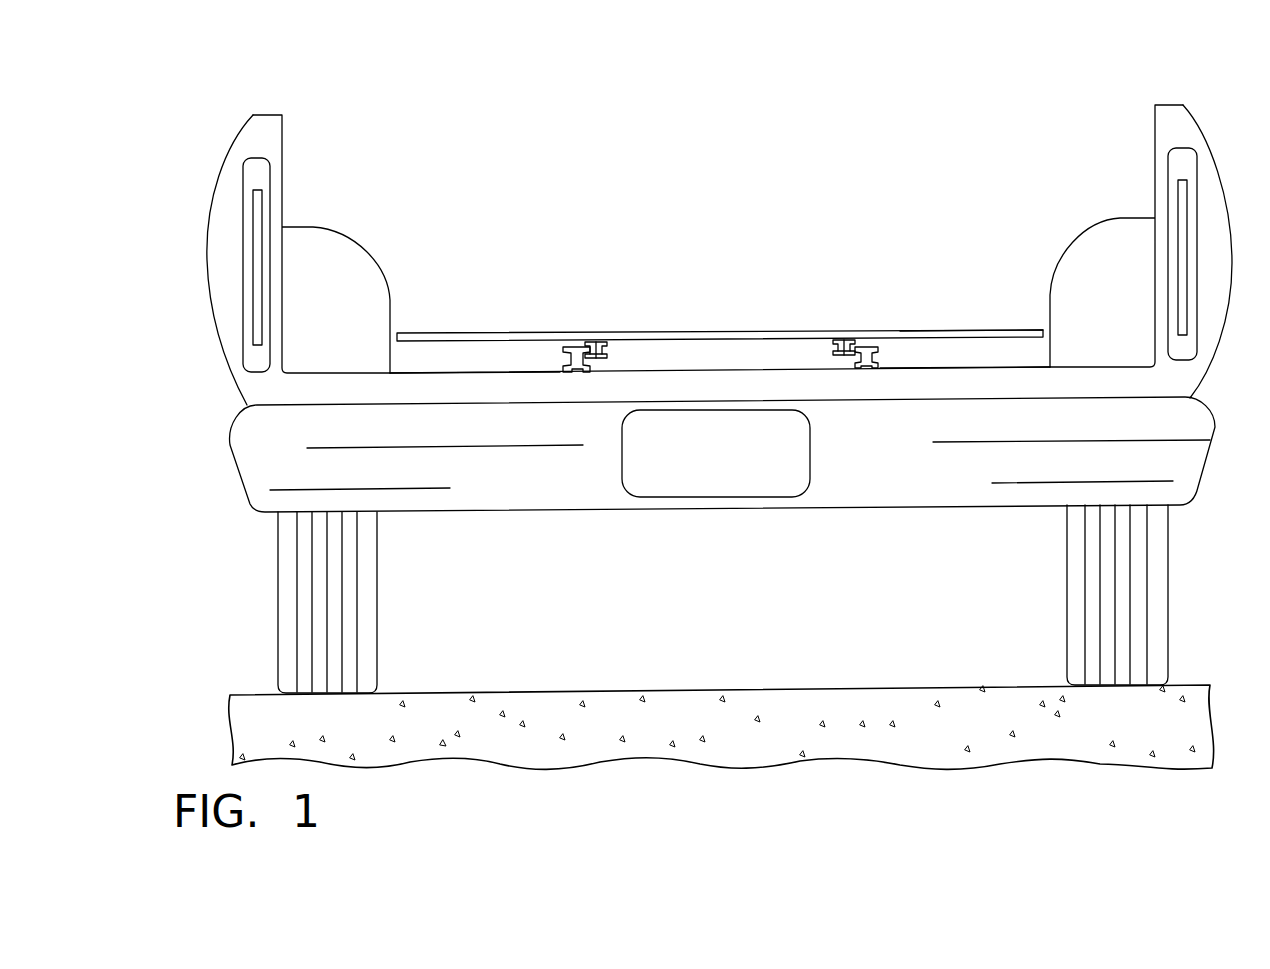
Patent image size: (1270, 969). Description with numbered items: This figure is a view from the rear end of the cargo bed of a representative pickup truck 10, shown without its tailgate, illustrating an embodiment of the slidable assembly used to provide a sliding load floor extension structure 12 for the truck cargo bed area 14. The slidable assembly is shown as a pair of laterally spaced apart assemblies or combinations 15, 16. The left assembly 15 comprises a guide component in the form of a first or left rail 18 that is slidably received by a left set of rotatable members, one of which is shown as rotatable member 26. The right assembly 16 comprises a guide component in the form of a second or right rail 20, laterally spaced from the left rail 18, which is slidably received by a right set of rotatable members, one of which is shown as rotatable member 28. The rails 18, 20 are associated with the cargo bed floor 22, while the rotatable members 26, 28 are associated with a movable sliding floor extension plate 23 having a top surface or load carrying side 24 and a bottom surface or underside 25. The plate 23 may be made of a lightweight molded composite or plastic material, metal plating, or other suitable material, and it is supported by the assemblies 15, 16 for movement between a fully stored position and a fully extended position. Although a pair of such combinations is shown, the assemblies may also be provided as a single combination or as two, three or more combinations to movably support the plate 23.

The pickup truck 10 is at (729, 66).
The sliding load floor extension structure 12 is at (649, 270).
The truck cargo bed area 14 is at (356, 110).
The left assembly or combination 15 is at (545, 361).
The right assembly or combination 16 is at (895, 357).
The first or left rail 18 is at (577, 345).
The second or right rail 20 is at (858, 345).
The cargo bed floor 22 is at (463, 373).
The movable sliding floor extension plate 23 is at (960, 333).
The top surface or load carrying side 24 is at (472, 333).
The bottom surface or underside 25 is at (1026, 340).
The rotatable member 26 is at (597, 358).
The rotatable member 28 is at (845, 356).